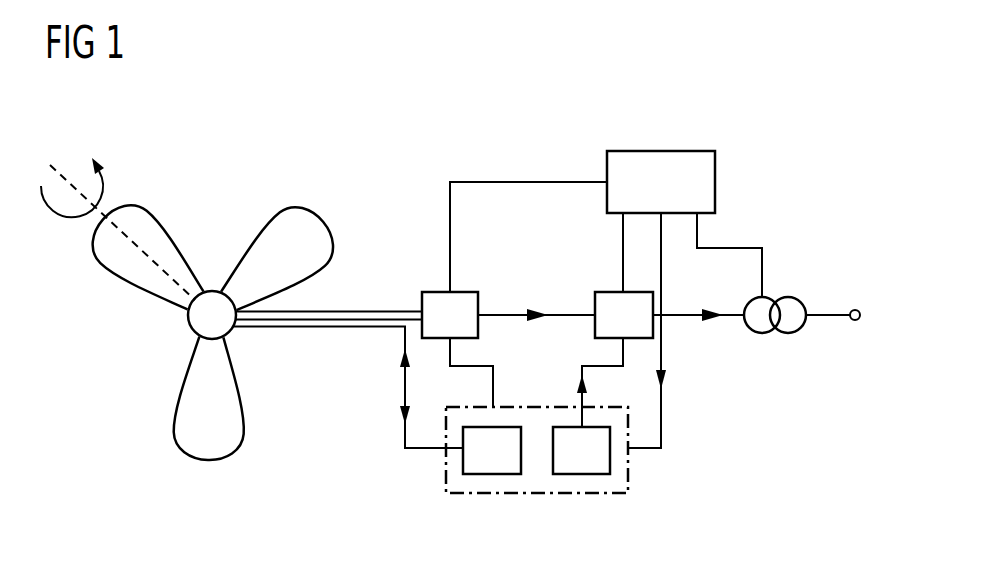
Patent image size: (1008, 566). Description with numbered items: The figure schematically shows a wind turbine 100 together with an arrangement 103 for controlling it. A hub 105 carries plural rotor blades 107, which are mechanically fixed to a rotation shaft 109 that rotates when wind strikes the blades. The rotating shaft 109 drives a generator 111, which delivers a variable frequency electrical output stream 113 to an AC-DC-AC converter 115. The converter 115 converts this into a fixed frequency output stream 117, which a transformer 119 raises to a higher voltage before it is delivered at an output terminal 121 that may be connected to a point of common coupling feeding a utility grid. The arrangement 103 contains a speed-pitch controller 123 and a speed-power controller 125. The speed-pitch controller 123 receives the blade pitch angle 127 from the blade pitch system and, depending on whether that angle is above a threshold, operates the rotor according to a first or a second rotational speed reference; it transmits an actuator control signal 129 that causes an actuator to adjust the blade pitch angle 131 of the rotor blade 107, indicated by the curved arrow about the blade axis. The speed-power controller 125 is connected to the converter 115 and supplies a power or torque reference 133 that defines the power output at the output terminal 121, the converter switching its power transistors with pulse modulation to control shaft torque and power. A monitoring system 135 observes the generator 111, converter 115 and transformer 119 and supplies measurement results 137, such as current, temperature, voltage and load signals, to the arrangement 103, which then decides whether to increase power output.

The wind turbine 100 is at (822, 134).
The arrangement for controlling the wind turbine 103 is at (446, 467).
The hub 105 is at (195, 319).
The rotor blades 107 is at (153, 218).
The rotation shaft 109 is at (350, 316).
The generator 111 is at (468, 292).
The electrical output stream 113 is at (545, 313).
The AC-DC-AC converter 115 is at (612, 292).
The fixed frequency output stream 117 is at (723, 312).
The transformer 119 is at (784, 297).
The output terminal 121 is at (856, 310).
The speed-pitch controller 123 is at (492, 474).
The speed-power controller 125 is at (582, 474).
The blade pitch angle 127 is at (405, 425).
The actuator control signal 129 is at (404, 350).
The blade pitch angle of the rotor blade 131 is at (72, 219).
The power (or torque) reference 133 is at (582, 375).
The monitoring system 135 is at (660, 151).
The measurement results 137 is at (662, 390).